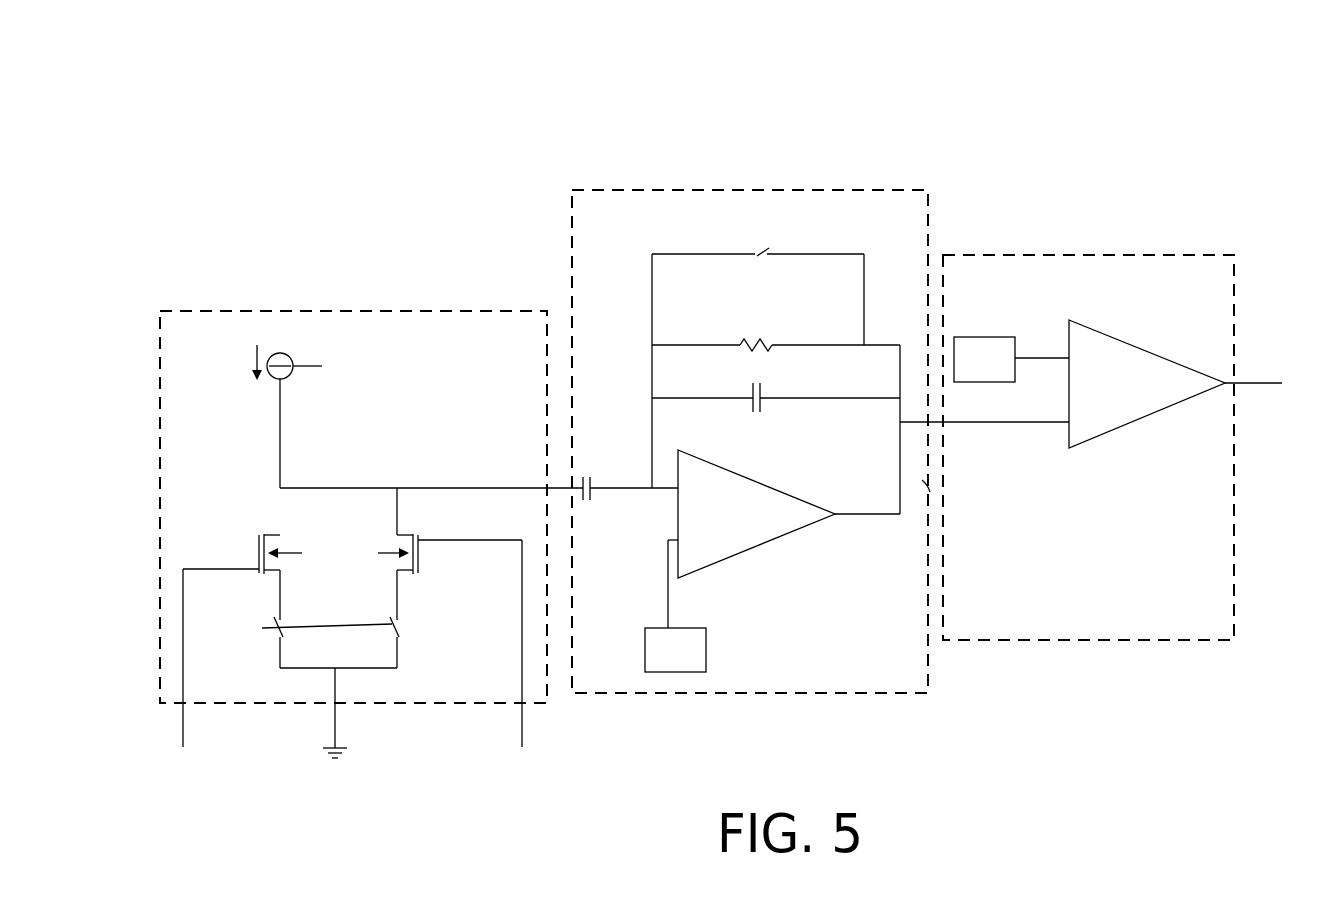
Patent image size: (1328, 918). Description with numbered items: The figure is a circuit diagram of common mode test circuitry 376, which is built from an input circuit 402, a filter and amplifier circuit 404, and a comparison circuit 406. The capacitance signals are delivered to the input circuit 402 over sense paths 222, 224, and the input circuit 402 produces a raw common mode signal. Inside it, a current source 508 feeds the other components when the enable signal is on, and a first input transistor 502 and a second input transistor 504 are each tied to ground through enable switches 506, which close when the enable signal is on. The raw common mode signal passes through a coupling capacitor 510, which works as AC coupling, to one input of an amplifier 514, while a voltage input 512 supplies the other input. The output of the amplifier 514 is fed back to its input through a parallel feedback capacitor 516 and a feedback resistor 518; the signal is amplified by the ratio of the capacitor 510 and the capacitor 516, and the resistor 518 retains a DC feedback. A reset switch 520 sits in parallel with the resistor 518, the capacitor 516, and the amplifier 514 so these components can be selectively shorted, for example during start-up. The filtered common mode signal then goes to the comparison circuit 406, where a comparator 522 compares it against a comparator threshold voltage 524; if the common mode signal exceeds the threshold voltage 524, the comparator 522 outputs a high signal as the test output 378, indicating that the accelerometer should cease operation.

The test circuitry 376 is at (1026, 88).
The input circuit 402 is at (447, 310).
The filter and amplifier circuit 404 is at (853, 695).
The comparison circuit 406 is at (1101, 253).
The test output 378 is at (1245, 382).
The current source 508 is at (288, 352).
The first input transistor 502 is at (240, 533).
The second input transistor 504 is at (428, 572).
The enable switches 506 is at (377, 618).
The capacitor 510 is at (590, 466).
The voltage input 512 is at (697, 628).
The amplifier 514 is at (773, 543).
The feedback capacitor 516 is at (764, 410).
The feedback resistor 518 is at (763, 352).
The reset switch 520 is at (762, 265).
The comparator 522 is at (1138, 420).
The comparator threshold voltage 524 is at (985, 338).
The sense path 222 is at (203, 751).
The sense path 224 is at (541, 750).